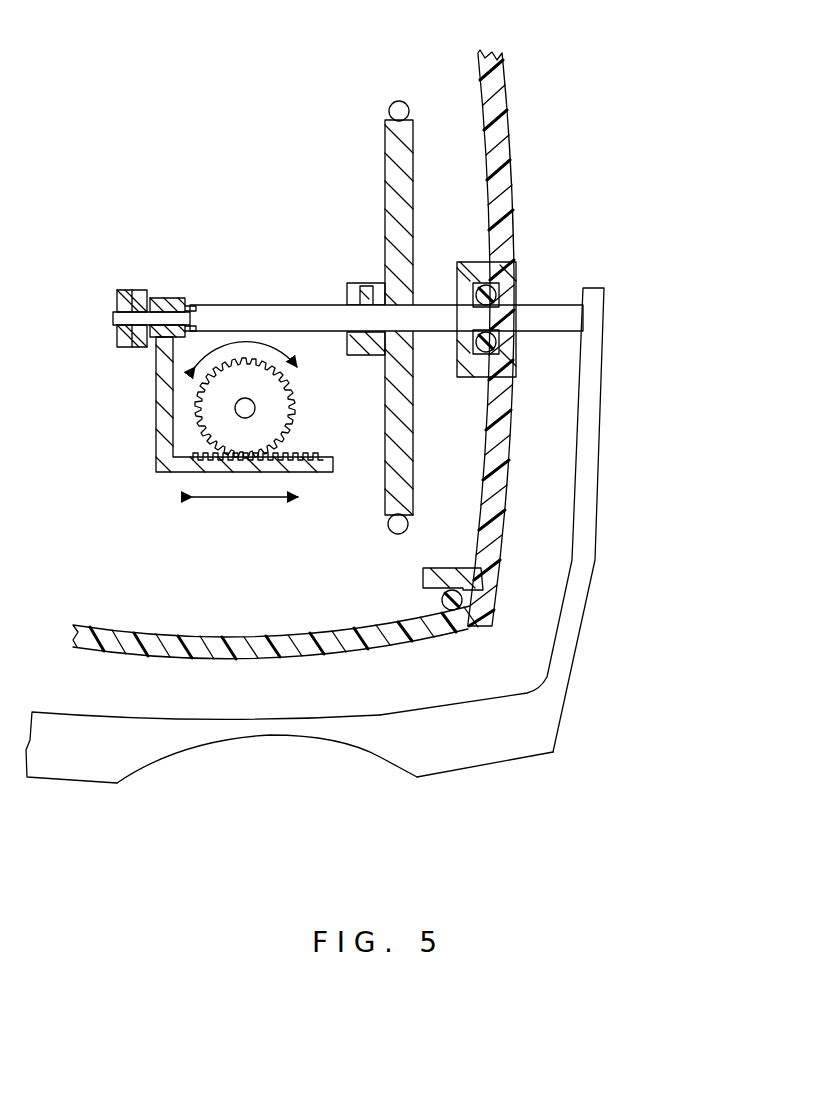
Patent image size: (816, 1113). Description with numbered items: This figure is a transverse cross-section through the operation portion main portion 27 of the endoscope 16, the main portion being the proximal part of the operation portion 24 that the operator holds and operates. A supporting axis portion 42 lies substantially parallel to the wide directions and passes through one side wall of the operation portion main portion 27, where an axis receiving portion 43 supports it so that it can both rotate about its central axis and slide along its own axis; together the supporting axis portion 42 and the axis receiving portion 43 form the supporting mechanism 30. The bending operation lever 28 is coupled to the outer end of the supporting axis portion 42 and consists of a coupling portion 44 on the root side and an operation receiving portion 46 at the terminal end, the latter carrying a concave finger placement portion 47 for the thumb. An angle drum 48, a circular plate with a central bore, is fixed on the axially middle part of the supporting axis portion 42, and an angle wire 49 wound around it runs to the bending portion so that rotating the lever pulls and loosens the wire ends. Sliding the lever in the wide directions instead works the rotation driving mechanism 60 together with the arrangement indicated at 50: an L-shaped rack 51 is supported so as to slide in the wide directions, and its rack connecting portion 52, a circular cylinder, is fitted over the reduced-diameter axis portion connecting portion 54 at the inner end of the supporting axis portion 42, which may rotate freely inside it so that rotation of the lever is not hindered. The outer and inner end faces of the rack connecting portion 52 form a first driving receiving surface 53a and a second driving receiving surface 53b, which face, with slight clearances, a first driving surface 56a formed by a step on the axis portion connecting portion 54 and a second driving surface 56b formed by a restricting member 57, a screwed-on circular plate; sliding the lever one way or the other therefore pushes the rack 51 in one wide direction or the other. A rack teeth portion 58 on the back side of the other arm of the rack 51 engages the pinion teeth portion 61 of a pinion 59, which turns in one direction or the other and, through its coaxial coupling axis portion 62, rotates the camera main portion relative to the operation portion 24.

The endoscope 16 is at (658, 78).
The operation portion 24 is at (657, 213).
The operation portion main portion 27 is at (520, 145).
The bending operation lever 28 is at (550, 780).
The supporting mechanism 30 is at (530, 267).
The supporting axis portion 42 is at (550, 310).
The axis receiving portion 43 is at (516, 365).
The coupling portion 44 is at (592, 525).
The operation receiving portion 46 is at (80, 778).
The finger placement portion 47 is at (265, 735).
The angle drum 48 is at (413, 185).
The angle wire 49 is at (398, 533).
The drive mechanism 50 is at (353, 233).
The rack 51 is at (155, 448).
The rack connecting portion 52 is at (165, 300).
The first driving receiving surface 53a is at (157, 380).
The second driving receiving surface 53b is at (157, 298).
The axis portion connecting portion 54 is at (135, 318).
The first driving surface 56a is at (192, 307).
The second driving surface 56b is at (142, 342).
The restricting member 57 is at (118, 290).
The rack teeth portion 58 is at (300, 455).
The pinion 59 is at (218, 422).
The rotation driving mechanism 60 is at (100, 458).
The pinion teeth portion 61 is at (293, 387).
The coupling axis portion 62 is at (255, 410).